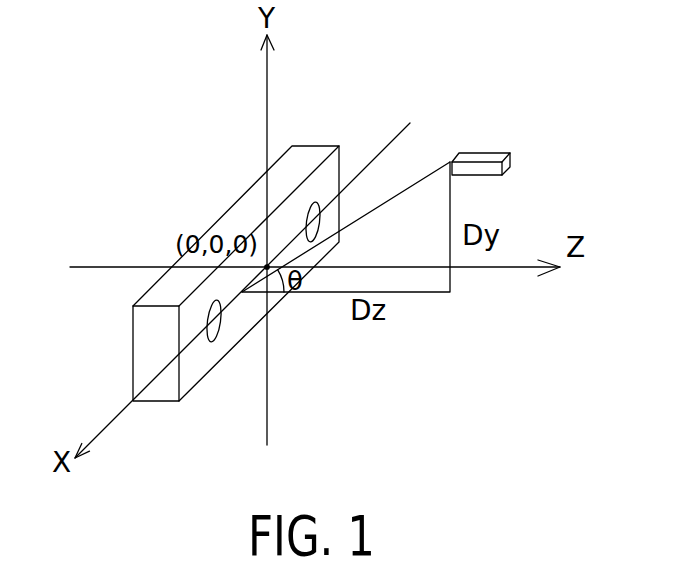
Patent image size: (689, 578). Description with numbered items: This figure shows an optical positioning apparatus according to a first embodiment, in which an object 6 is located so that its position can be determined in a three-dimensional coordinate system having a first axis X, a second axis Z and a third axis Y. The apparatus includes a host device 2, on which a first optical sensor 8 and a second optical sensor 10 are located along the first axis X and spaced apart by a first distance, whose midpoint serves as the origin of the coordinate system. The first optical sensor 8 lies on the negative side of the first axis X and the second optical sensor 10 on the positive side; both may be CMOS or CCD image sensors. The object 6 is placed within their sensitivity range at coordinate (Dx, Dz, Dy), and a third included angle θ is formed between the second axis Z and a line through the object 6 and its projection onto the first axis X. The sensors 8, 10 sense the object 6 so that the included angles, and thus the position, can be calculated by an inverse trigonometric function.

The host device 2 is at (238, 199).
The object 6 is at (498, 155).
The first optical sensor 8 is at (315, 205).
The second optical sensor 10 is at (220, 333).